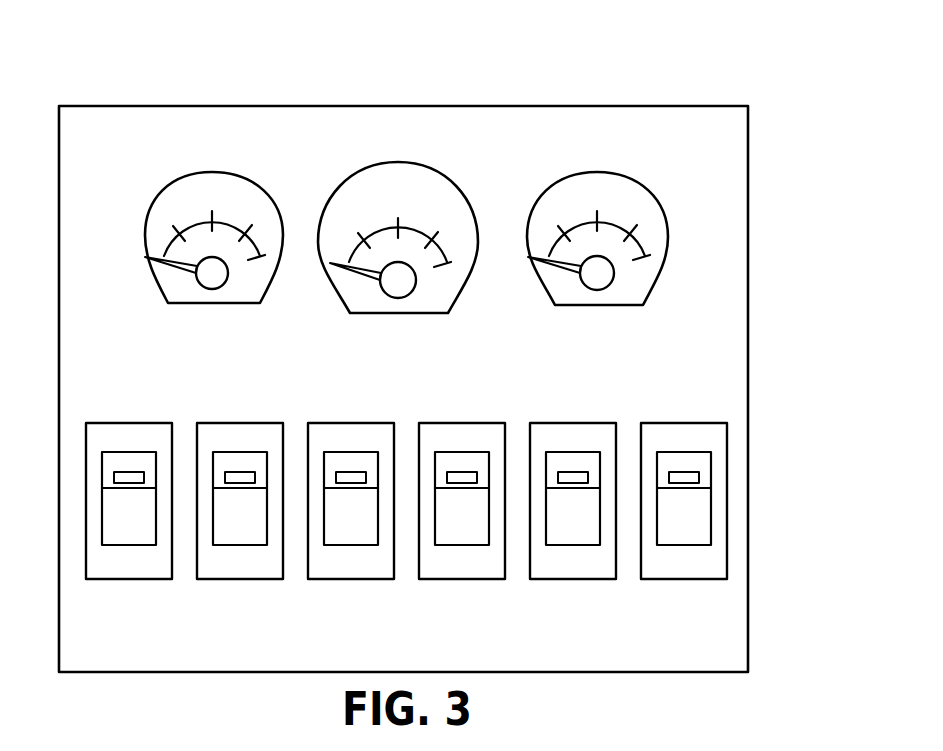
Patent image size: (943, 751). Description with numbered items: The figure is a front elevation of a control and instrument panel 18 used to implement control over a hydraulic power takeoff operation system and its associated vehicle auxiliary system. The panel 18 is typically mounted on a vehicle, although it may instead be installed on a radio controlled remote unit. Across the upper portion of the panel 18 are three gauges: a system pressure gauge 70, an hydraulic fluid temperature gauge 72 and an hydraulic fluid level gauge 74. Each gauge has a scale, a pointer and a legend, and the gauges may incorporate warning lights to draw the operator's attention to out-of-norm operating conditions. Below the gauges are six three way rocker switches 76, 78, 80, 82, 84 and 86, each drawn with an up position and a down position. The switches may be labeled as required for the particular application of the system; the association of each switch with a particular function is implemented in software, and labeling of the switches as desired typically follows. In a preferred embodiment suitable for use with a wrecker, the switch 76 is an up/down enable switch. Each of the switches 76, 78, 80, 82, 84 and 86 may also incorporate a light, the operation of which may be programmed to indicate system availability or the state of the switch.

The control and instrument panel 18 is at (473, 106).
The system pressure gauge 70 is at (167, 178).
The hydraulic fluid temperature gauge 72 is at (348, 170).
The hydraulic fluid level gauge 74 is at (543, 182).
The three way rocker switch 76 is at (162, 422).
The three way rocker switch 78 is at (258, 422).
The three way rocker switch 80 is at (378, 422).
The three way rocker switch 82 is at (483, 422).
The three way rocker switch 84 is at (592, 422).
The three way rocker switch 86 is at (703, 422).